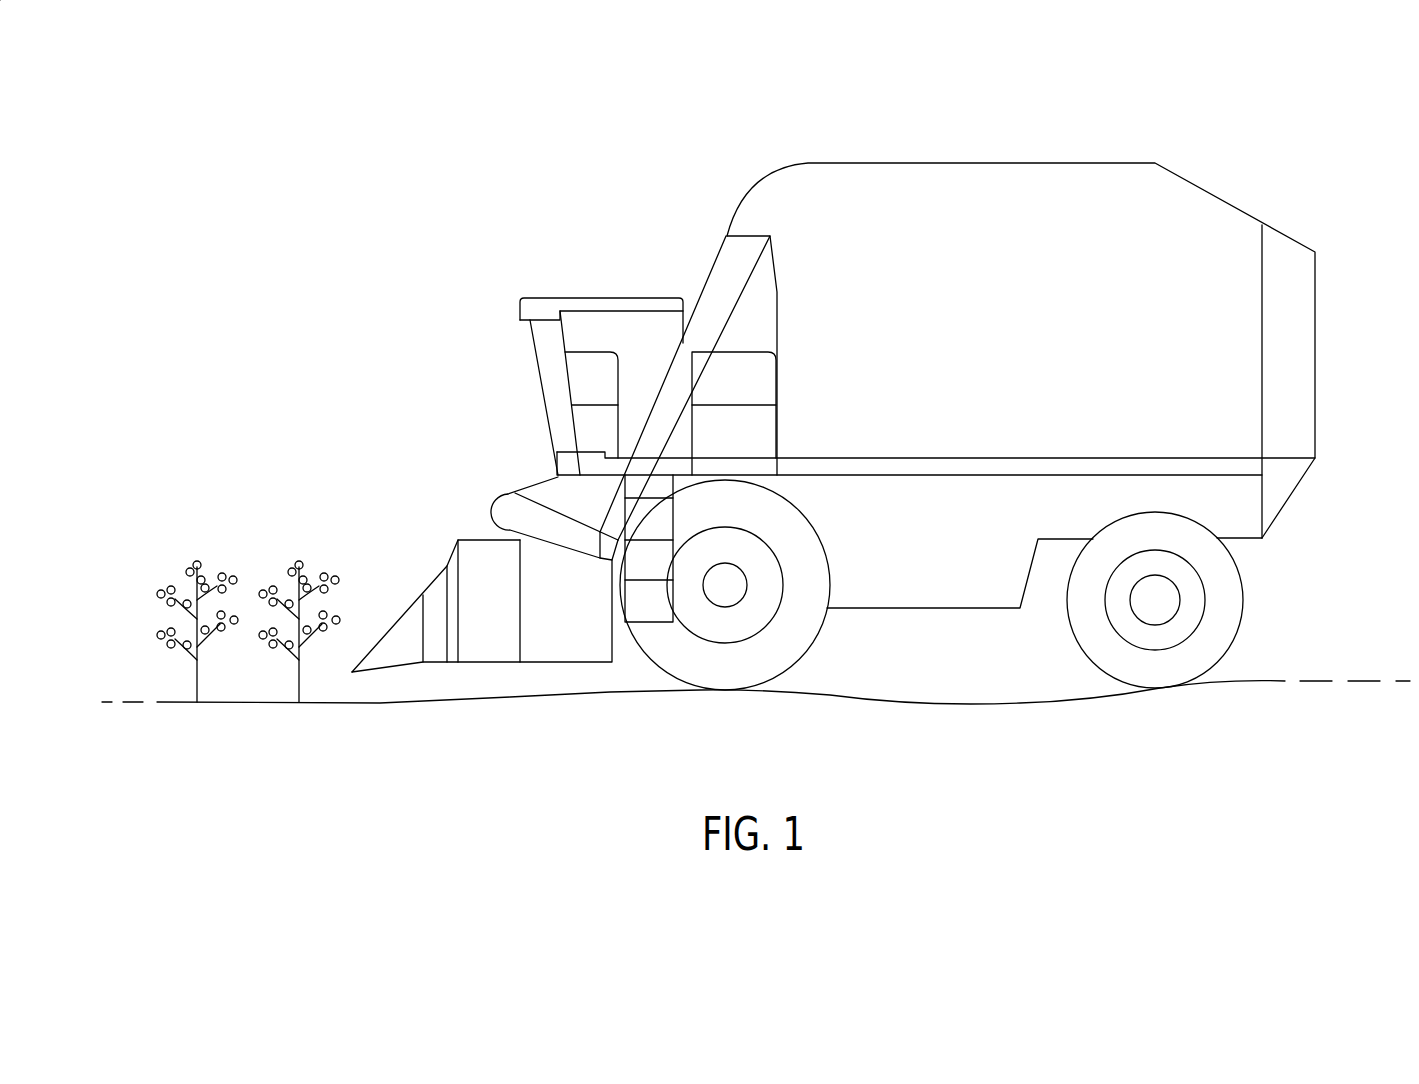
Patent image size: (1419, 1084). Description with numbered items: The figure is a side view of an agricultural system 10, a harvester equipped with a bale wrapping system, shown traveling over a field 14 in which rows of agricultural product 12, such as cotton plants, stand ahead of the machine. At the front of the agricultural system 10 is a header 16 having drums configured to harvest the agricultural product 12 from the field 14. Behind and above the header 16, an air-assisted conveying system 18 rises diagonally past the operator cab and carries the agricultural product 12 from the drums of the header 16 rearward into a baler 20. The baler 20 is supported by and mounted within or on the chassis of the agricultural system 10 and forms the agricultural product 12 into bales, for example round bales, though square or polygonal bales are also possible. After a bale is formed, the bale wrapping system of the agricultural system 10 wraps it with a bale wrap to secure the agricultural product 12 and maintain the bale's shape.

The agricultural system 10 is at (838, 450).
The agricultural product 12 is at (255, 675).
The field 14 is at (408, 704).
The header 16 is at (473, 551).
The air-assisted conveying system 18 is at (727, 283).
The baler 20 is at (1232, 178).